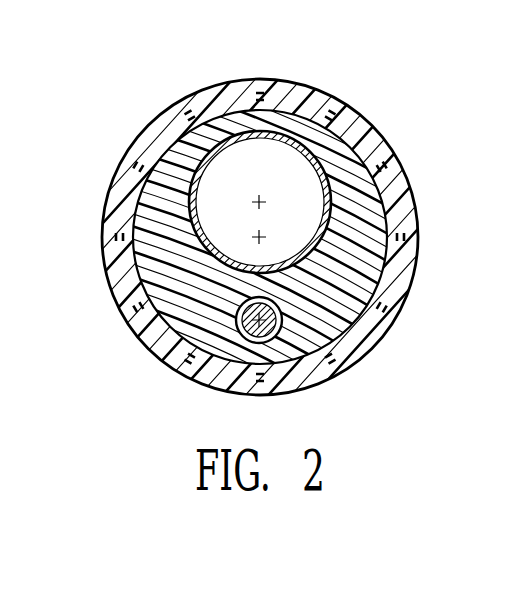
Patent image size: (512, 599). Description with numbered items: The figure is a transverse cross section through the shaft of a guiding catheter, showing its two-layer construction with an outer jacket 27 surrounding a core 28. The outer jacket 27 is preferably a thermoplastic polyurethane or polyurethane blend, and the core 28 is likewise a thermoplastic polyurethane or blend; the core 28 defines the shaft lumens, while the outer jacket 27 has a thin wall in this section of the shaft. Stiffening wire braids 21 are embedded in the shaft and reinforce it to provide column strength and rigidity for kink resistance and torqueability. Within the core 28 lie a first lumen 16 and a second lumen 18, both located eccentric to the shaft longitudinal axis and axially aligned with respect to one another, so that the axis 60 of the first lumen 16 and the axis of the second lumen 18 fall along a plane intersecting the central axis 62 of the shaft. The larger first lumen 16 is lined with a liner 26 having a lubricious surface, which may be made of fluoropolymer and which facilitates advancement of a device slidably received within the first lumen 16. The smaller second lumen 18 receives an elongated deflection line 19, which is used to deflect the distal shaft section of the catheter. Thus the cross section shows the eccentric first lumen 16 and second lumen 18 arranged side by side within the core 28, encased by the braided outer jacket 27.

The first lumen 16 is at (215, 193).
The second lumen 18 is at (242, 318).
The deflection line 19 is at (251, 328).
The stiffening wire braids 21 is at (390, 155).
The liner 26 is at (282, 137).
The outer jacket 27 is at (375, 330).
The core 28 is at (357, 222).
The axis of the first lumen 60 is at (259, 201).
The central axis of the shaft 62 is at (259, 237).